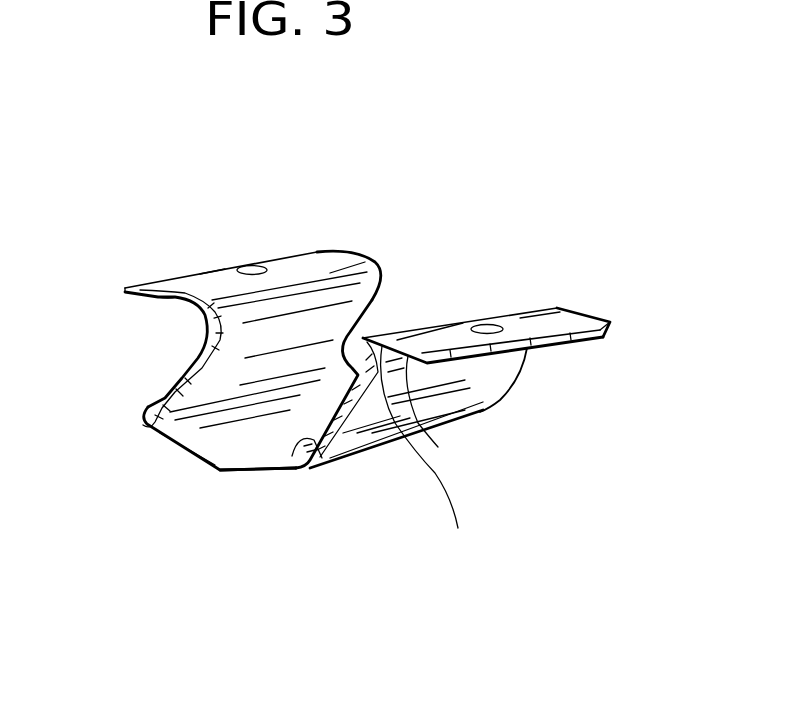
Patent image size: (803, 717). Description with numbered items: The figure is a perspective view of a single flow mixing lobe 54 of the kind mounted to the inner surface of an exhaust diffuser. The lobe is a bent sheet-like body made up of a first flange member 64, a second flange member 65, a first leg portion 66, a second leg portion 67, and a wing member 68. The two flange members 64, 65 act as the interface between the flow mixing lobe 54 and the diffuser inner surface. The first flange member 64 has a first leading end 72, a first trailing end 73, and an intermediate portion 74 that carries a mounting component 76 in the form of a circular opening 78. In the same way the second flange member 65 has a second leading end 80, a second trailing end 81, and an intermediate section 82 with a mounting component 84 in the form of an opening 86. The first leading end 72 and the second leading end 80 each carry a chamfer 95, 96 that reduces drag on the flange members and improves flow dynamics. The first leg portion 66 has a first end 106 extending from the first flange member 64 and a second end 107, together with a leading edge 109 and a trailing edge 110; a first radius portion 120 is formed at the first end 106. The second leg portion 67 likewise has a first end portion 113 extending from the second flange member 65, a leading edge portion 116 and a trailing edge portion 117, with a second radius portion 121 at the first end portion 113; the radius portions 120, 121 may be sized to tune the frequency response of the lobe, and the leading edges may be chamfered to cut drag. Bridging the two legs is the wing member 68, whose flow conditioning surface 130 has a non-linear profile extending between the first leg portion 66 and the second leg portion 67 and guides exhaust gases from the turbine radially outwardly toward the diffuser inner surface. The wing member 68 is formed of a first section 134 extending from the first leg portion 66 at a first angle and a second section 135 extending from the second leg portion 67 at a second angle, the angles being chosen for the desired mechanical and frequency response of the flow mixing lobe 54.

The flow mixing lobe 54 is at (495, 497).
The first flange member 64 is at (200, 270).
The second flange member 65 is at (572, 330).
The first leg portion 66 is at (179, 357).
The second leg portion 67 is at (453, 405).
The wing member 68 is at (163, 473).
The first leading end 72 is at (130, 296).
The first trailing end 73 is at (336, 254).
The intermediate portion 74 is at (292, 265).
The mounting component 76 is at (227, 259).
The opening 78 is at (250, 264).
The second leading end 80 is at (375, 345).
The second trailing end 81 is at (584, 311).
The intermediate section 82 is at (540, 320).
The mounting component 84 is at (503, 308).
The opening 86 is at (480, 325).
The chamfer 95 is at (178, 297).
The chamfer 96 is at (396, 415).
The first end 106 is at (243, 383).
The second end 107 is at (352, 278).
The leading edge 109 is at (160, 392).
The trailing edge 110 is at (368, 340).
The first end portion 113 is at (353, 458).
The leading edge portion 116 is at (356, 382).
The trailing edge portion 117 is at (517, 378).
The first radius portion 120 is at (198, 327).
The second radius portion 121 is at (430, 453).
The flow conditioning surface 130 is at (202, 435).
The first section 134 is at (220, 444).
The second section 135 is at (330, 460).